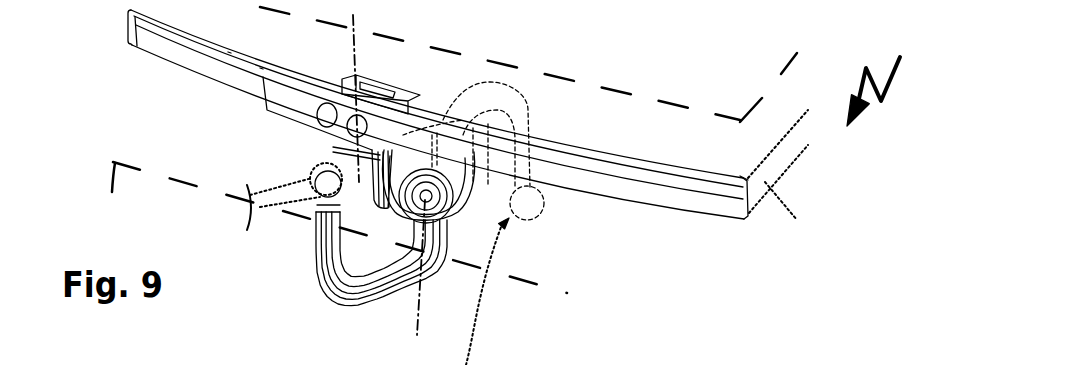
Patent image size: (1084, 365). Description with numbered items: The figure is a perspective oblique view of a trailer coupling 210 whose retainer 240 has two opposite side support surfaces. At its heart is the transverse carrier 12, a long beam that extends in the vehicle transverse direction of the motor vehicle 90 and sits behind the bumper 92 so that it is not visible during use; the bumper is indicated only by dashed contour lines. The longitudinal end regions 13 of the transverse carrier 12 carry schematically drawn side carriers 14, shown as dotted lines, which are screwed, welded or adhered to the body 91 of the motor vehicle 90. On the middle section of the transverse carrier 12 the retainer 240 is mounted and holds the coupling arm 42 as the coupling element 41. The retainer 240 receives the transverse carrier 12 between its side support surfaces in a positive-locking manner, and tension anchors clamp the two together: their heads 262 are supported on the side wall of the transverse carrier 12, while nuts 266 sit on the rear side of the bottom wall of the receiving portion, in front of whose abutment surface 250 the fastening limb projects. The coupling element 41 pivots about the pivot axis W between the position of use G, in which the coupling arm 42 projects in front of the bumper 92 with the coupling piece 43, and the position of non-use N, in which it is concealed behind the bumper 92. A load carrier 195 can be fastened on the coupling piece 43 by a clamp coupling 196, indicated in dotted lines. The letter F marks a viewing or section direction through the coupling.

The transverse carrier 12 is at (707, 208).
The longitudinal end region 13 is at (741, 178).
The side carrier 14 is at (790, 177).
The coupling element 41 is at (436, 276).
The coupling arm 42 is at (332, 304).
The coupling piece 43 is at (530, 221).
The motor vehicle 90 is at (623, 85).
The body 91 is at (780, 72).
The bumper 92 is at (330, 227).
The load carrier 195 is at (260, 207).
The clamp coupling 196 is at (310, 175).
The trailer coupling 210 is at (895, 74).
The retainer 240 is at (424, 105).
The abutment surface 250 is at (581, 361).
The head 262 is at (353, 116).
The nut 266 is at (752, 364).
The section direction F is at (332, 36).
The position of use G is at (306, 270).
The position of non-use N is at (559, 225).
The pivot axis W is at (416, 312).